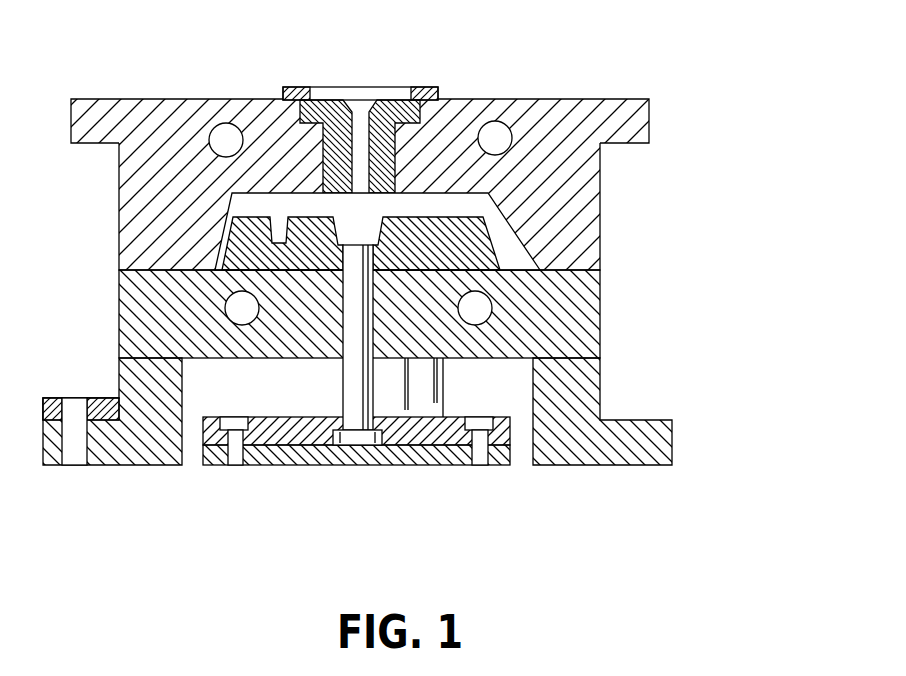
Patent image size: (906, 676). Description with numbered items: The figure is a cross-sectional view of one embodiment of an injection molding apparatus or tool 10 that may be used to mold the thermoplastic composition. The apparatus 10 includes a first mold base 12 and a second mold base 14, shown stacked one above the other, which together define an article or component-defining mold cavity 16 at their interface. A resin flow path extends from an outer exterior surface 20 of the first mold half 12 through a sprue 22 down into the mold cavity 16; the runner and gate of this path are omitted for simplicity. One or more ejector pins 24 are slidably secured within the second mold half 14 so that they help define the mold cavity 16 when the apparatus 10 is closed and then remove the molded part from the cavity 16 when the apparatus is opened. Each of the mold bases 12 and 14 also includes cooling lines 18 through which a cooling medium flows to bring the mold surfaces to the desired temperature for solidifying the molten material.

The injection molding apparatus 10 is at (640, 86).
The first mold base 12 is at (360, 139).
The second mold base 14 is at (604, 315).
The mold cavity 16 is at (443, 190).
The cooling lines 18 is at (218, 142).
The outer exterior surface 20 is at (163, 99).
The sprue 22 is at (388, 87).
The ejector pins 24 is at (343, 390).